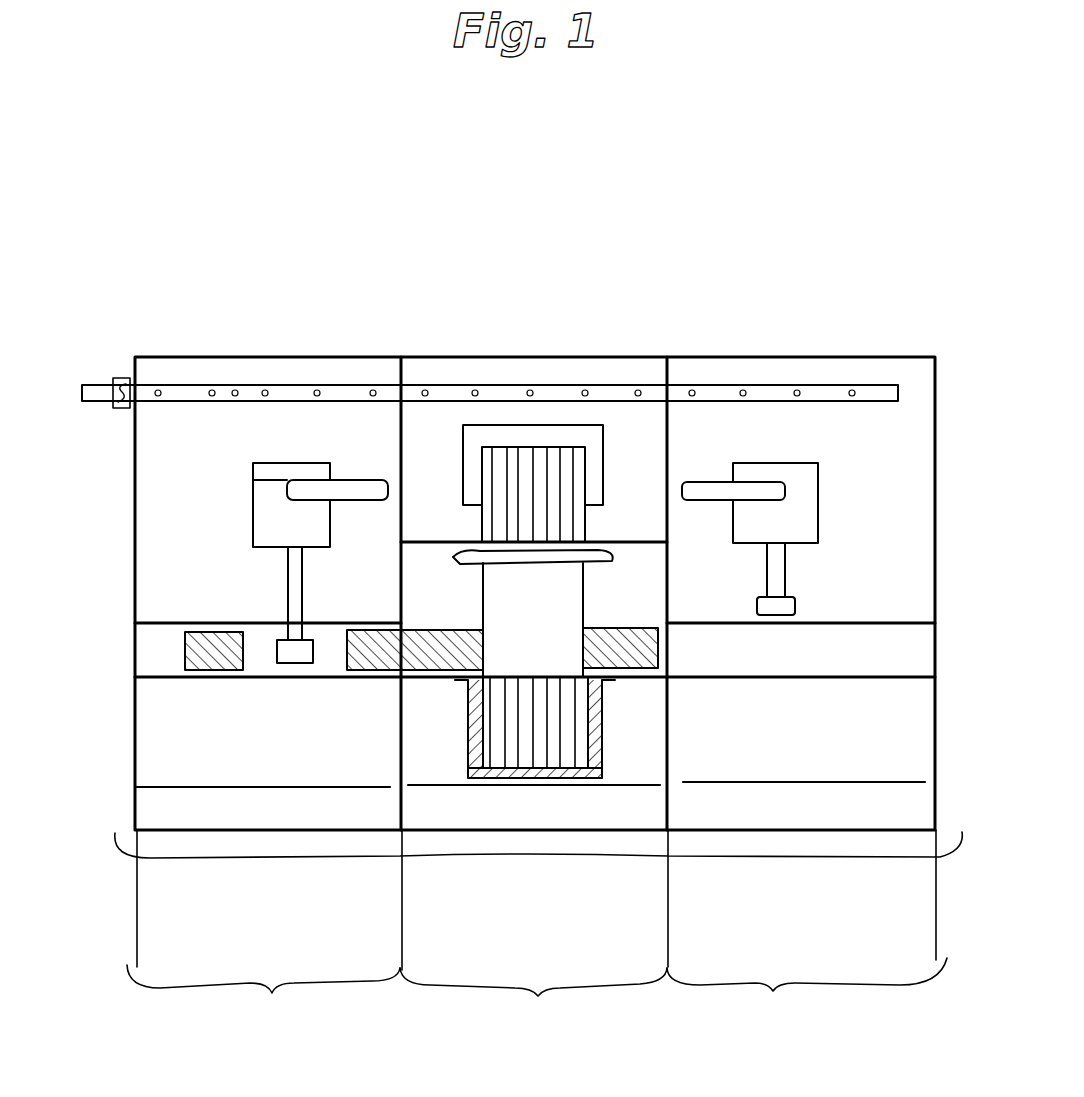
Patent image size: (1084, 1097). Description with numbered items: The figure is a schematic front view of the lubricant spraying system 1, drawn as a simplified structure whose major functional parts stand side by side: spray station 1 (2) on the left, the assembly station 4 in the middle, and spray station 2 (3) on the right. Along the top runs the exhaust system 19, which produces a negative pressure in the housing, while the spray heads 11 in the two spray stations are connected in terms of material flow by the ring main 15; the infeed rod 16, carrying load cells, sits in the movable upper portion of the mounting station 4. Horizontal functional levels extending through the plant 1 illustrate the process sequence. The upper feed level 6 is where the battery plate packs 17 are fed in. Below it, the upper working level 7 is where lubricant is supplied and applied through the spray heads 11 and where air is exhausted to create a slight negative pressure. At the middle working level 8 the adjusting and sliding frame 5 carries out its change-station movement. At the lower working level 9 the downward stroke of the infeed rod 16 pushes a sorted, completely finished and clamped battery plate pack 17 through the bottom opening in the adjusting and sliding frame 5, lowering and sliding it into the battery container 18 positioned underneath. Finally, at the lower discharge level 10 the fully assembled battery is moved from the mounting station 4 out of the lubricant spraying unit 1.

The lubricant spraying system 1 is at (224, 320).
The spray station 1 2 is at (263, 997).
The spray station 2 3 is at (807, 994).
The assembly station 4 is at (533, 999).
The adjusting and sliding frame 5 is at (217, 653).
The upper feed level 6 is at (625, 541).
The upper working level 7 is at (343, 618).
The middle working level 8 is at (157, 673).
The lower working level 9 is at (420, 782).
The lower discharge level 10 is at (742, 780).
The spray head 11 is at (295, 650).
The ring main 15 is at (370, 490).
The infeed rod 16 is at (312, 675).
The battery plate pack 17 is at (540, 505).
The battery container 18 is at (455, 783).
The exhaust system 19 is at (230, 392).